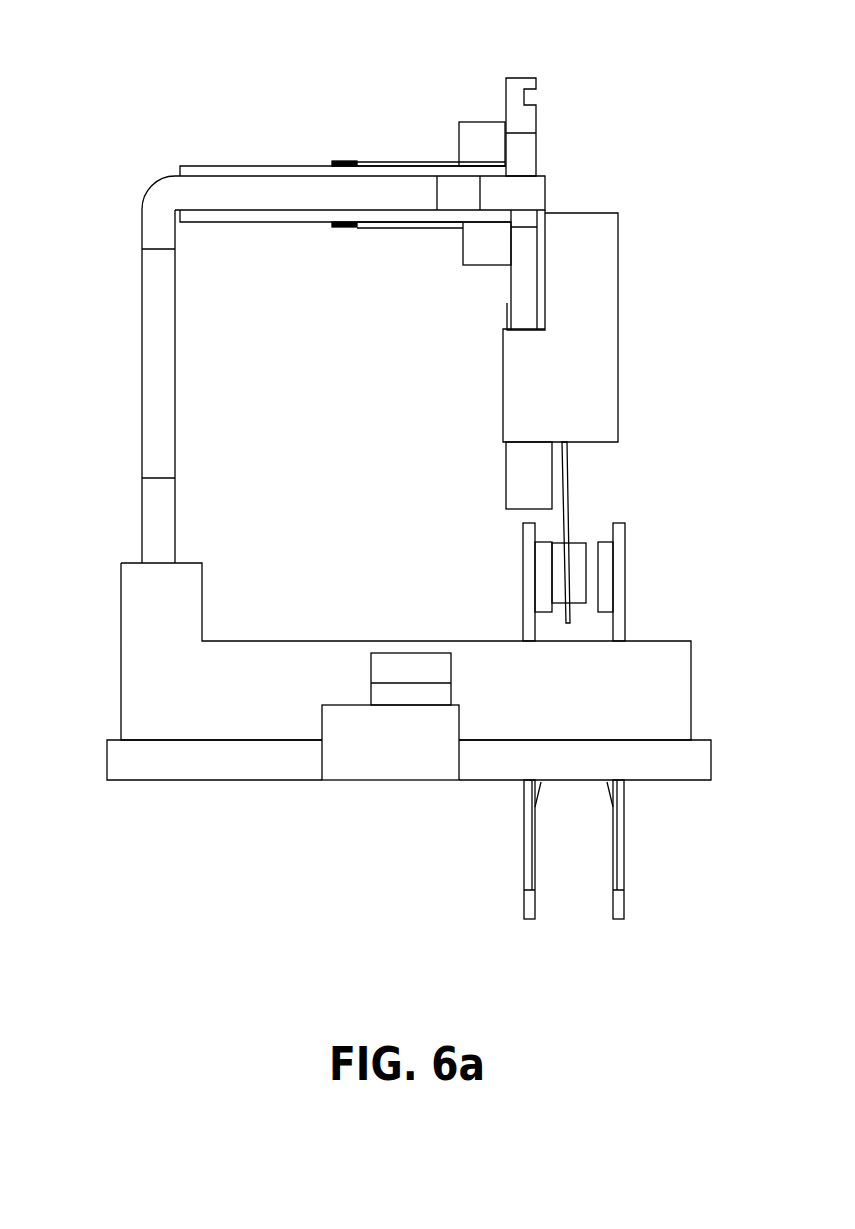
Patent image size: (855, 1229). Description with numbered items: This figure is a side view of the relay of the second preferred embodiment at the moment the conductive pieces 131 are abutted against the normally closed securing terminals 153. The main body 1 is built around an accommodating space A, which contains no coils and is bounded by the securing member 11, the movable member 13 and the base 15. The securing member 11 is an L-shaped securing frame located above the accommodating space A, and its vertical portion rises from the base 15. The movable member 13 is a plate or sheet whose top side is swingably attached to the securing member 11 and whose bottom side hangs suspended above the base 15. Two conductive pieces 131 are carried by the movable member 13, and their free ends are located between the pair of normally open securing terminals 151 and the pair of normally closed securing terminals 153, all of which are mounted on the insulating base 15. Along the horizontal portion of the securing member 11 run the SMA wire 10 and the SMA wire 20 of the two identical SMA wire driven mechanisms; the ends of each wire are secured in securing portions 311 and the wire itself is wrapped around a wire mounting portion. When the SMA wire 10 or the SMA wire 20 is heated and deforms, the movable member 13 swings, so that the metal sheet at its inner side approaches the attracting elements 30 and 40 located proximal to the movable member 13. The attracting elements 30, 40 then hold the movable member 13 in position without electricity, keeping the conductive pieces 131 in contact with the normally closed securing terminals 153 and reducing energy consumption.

The main body 1 is at (152, 173).
The securing member 11 is at (140, 208).
The SMA wire 20 is at (397, 162).
The attracting element 40 is at (480, 137).
The securing portion 311 is at (347, 228).
The SMA wire 10 is at (395, 228).
The attracting element 30 is at (480, 263).
The movable member 13 is at (605, 333).
The conductive piece 131 is at (567, 492).
The base 15 is at (676, 690).
The normally closed securing terminal 153 is at (528, 869).
The normally open securing terminal 151 is at (620, 869).
The accommodating space A is at (262, 447).